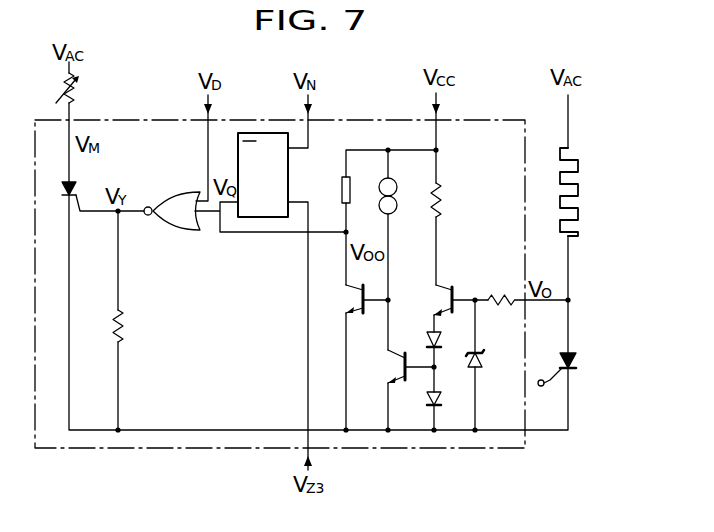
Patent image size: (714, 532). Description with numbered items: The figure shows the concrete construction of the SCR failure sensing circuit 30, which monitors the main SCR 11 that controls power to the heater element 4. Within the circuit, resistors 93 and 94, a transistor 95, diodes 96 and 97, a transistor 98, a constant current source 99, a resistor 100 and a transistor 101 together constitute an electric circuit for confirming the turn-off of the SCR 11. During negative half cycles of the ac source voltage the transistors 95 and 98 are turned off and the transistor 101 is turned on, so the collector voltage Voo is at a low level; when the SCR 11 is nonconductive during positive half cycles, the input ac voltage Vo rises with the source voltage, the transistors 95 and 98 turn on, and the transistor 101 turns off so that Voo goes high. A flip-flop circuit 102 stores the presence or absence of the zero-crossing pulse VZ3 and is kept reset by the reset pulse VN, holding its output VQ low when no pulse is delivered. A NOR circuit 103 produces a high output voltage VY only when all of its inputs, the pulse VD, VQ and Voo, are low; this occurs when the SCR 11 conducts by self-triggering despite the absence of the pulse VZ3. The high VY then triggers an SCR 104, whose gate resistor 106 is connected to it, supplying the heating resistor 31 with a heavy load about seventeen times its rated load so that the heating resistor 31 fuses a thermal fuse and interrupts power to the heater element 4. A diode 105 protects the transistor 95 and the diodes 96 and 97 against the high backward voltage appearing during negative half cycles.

The heater element 4 is at (580, 205).
The SCR 11 is at (580, 364).
The SCR failure sensing circuit 30 is at (391, 103).
The heating resistor 31 is at (78, 92).
The resistor 93 is at (499, 297).
The resistor 94 is at (440, 200).
The transistor 95 is at (445, 292).
The diode 96 is at (427, 340).
The diode 97 is at (427, 399).
The transistor 98 is at (398, 365).
The constant current source 99 is at (396, 186).
The resistor 100 is at (350, 193).
The transistor 101 is at (356, 301).
The flip-flop circuit 102 is at (288, 170).
The NOR circuit 103 is at (172, 193).
The SCR 104 is at (76, 194).
The diode 105 is at (482, 360).
The gate resistor 106 is at (124, 327).